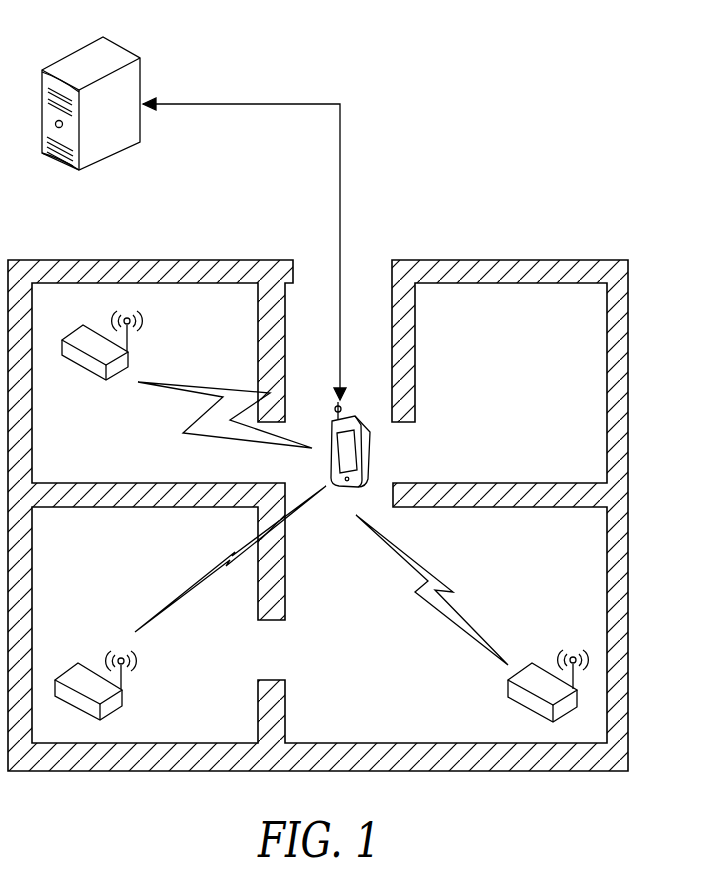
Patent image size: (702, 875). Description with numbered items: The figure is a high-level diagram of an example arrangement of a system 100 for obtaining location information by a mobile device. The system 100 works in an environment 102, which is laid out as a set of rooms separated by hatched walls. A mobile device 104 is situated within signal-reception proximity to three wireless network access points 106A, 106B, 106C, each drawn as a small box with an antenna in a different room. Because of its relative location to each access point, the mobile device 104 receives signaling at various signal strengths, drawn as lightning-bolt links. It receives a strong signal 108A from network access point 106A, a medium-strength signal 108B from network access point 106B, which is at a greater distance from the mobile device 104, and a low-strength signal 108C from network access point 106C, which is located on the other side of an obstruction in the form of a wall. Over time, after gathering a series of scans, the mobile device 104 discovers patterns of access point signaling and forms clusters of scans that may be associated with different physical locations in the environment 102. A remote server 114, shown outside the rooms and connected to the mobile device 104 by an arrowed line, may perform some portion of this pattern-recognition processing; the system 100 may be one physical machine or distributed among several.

The system 100 is at (527, 139).
The environment 102 is at (528, 259).
The mobile device 104 is at (371, 436).
The wireless network access point 106A is at (75, 366).
The wireless network access point 106B is at (516, 697).
The wireless network access point 106C is at (59, 693).
The strong signal 108A is at (194, 436).
The medium-strength signal 108B is at (415, 593).
The low-strength signal 108C is at (176, 601).
The remote server 114 is at (80, 170).